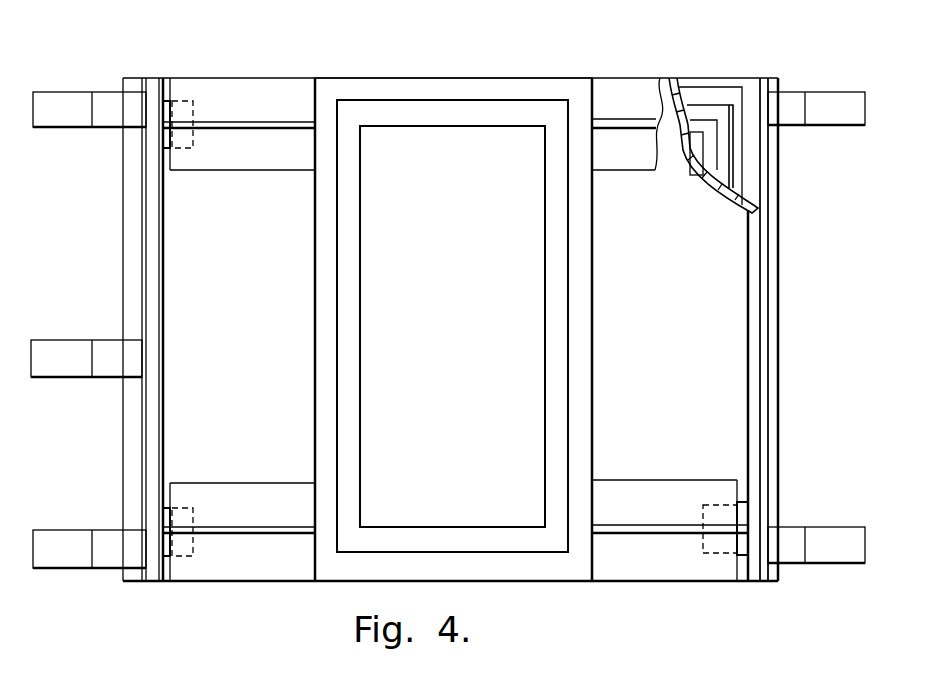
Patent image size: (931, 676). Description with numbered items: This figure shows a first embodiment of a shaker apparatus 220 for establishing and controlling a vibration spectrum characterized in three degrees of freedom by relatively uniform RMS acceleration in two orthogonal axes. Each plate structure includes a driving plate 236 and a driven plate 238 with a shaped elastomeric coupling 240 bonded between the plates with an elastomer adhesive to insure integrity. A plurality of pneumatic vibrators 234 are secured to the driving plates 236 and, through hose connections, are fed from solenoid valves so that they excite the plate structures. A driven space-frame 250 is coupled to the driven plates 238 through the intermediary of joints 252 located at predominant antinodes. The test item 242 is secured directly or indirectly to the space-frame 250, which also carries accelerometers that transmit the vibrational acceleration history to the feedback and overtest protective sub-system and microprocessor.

The shaker apparatus 220 is at (82, 64).
The pneumatic vibrators 234 is at (82, 122).
The driving plate 236 is at (738, 117).
The driven plate 238 is at (665, 87).
The shaped elastomeric coupling 240 is at (698, 132).
The test item 242 is at (458, 288).
The driven space-frame 250 is at (262, 88).
The joints 252 is at (172, 118).